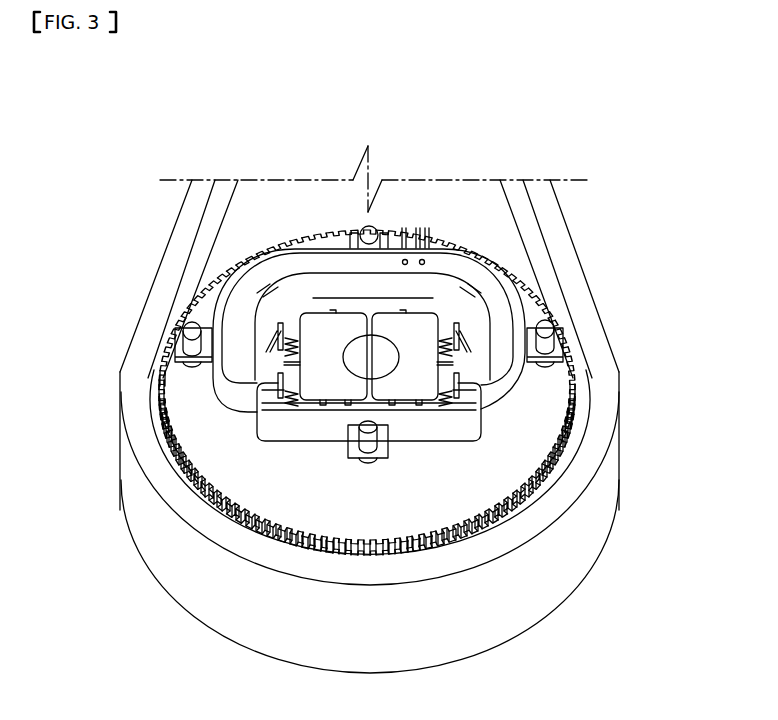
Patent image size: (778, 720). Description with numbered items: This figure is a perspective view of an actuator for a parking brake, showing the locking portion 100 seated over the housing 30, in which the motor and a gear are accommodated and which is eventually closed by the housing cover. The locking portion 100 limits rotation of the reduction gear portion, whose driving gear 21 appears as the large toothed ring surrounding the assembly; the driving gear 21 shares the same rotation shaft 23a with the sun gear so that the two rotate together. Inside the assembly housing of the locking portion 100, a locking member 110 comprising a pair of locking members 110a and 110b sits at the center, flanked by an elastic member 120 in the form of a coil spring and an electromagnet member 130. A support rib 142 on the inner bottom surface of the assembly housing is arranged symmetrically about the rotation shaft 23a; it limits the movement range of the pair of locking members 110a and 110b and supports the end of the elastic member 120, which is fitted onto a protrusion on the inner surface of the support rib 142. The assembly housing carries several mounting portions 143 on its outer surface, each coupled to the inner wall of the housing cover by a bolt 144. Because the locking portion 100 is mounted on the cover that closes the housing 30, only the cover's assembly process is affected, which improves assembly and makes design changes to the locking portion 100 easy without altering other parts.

The locking portion 100 is at (284, 449).
The locking member 110 is at (447, 118).
The locking member 110a is at (423, 322).
The locking member 110b is at (305, 322).
The elastic member 120 is at (483, 403).
The electromagnet member 130 is at (246, 312).
The support rib 142 is at (480, 383).
The mounting portion 143 is at (177, 343).
The bolt 144 is at (176, 326).
The driving gear 21 is at (533, 311).
The rotation shaft 23a is at (390, 357).
The housing 30 is at (136, 512).